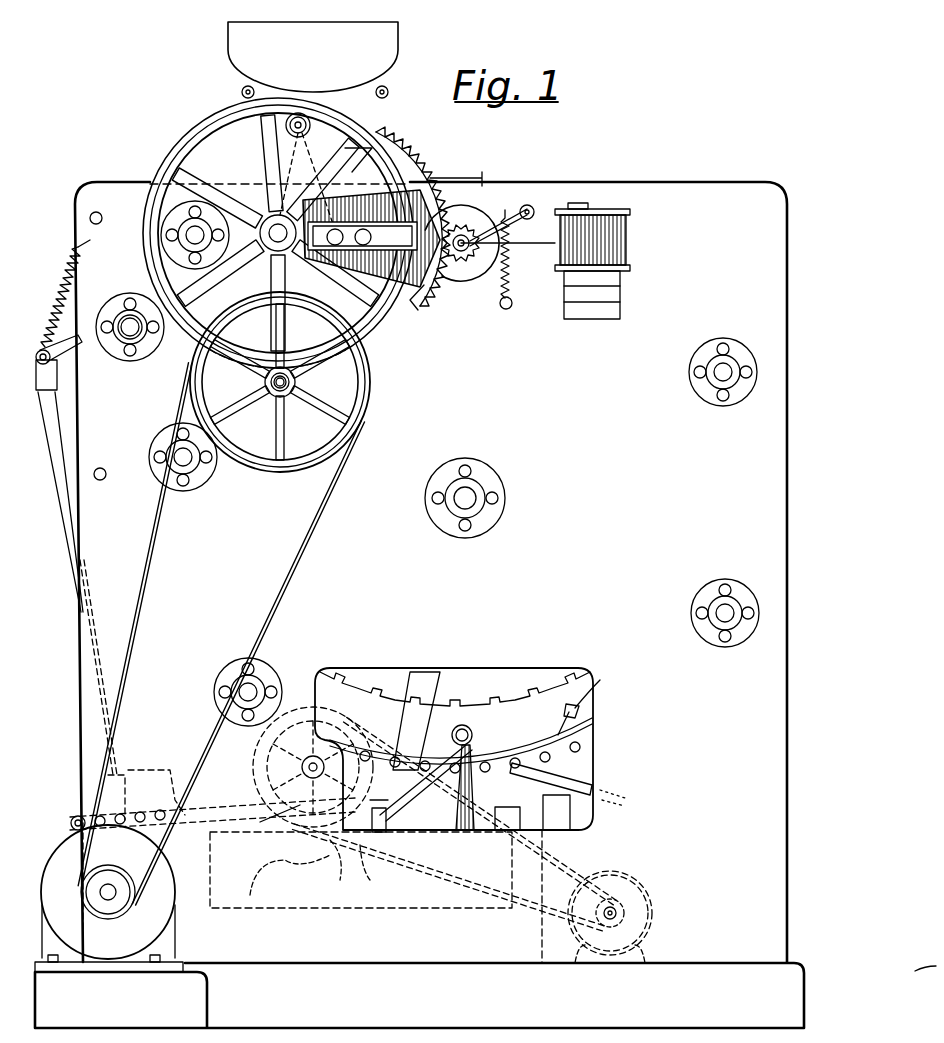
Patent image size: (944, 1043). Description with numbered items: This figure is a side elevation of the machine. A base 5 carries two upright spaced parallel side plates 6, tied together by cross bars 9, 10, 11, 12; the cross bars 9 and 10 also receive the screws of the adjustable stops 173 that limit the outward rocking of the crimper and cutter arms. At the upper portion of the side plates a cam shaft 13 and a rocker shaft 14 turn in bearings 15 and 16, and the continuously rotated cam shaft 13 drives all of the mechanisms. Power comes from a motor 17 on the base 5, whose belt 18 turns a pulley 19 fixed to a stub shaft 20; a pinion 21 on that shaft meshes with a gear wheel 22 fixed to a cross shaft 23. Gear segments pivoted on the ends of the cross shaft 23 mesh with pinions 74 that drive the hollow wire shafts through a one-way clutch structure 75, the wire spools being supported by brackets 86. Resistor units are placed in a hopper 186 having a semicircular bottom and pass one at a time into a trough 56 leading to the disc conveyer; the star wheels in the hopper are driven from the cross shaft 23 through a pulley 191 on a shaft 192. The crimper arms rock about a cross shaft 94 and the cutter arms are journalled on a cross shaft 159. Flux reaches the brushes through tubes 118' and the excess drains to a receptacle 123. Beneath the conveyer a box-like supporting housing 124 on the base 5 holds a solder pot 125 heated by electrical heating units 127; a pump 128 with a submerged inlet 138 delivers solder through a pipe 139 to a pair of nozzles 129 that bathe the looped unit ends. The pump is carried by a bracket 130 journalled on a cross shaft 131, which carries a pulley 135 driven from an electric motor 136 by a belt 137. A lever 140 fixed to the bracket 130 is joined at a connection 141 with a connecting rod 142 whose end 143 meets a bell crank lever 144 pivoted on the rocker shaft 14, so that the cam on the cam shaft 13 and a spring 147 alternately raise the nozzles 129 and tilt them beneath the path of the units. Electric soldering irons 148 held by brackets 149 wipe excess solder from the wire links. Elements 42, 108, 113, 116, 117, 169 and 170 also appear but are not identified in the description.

The base 5 is at (738, 975).
The side plates 6 is at (742, 196).
The cross bar 9 is at (728, 362).
The cross bar 10 is at (190, 482).
The cross bar 11 is at (98, 210).
The cross bar 12 is at (104, 468).
The cam shaft 13 is at (200, 226).
The rocker shaft 14 is at (127, 312).
The bearings 15 is at (160, 185).
The bearings 16 is at (120, 296).
The motor 17 is at (484, 178).
The belt 18 is at (300, 600).
The pulley 19 is at (280, 470).
The stub shaft 20 is at (262, 412).
The pinion 21 is at (298, 384).
The gear wheel 22 is at (410, 195).
The cross shaft 23 is at (270, 216).
The screen 42 is at (470, 700).
The trough 56 is at (356, 157).
The pinions 74 is at (458, 262).
The one-way clutch structure 75 is at (504, 300).
The brackets 86 is at (602, 300).
The cross shaft 94 is at (728, 600).
The bearing 108 is at (470, 490).
The sector plate 113 is at (400, 200).
The pawl 116 is at (428, 311).
The motor 117 is at (50, 840).
The tubes 118' is at (596, 693).
The receptacle 123 is at (570, 780).
The supporting housing 124 is at (542, 940).
The solder pot 125 is at (395, 908).
The electrical heating units 127 is at (515, 815).
The pump 128 is at (346, 867).
The nozzles 129 is at (525, 735).
The bracket 130 is at (313, 767).
The cross shaft 131 is at (320, 735).
The pulley 135 is at (230, 810).
The electric motor 136 is at (640, 895).
The belt 137 is at (580, 872).
The inlet 138 is at (361, 870).
The pipe 139 is at (440, 792).
The lever 140 is at (307, 181).
The connection 141 is at (118, 805).
The connecting rod 142 is at (78, 505).
The end of connecting rod 143 is at (40, 355).
The bell crank lever 144 is at (47, 392).
The spring 147 is at (96, 239).
The electric soldering irons 148 is at (395, 805).
The brackets 149 is at (425, 690).
The cross shaft 159 is at (255, 682).
The loop 169 is at (470, 730).
The roller slot 170 is at (338, 246).
The adjustable stops 173 is at (440, 185).
The hopper 186 is at (313, 60).
The pulley 191 is at (302, 120).
The shaft 192 is at (296, 113).